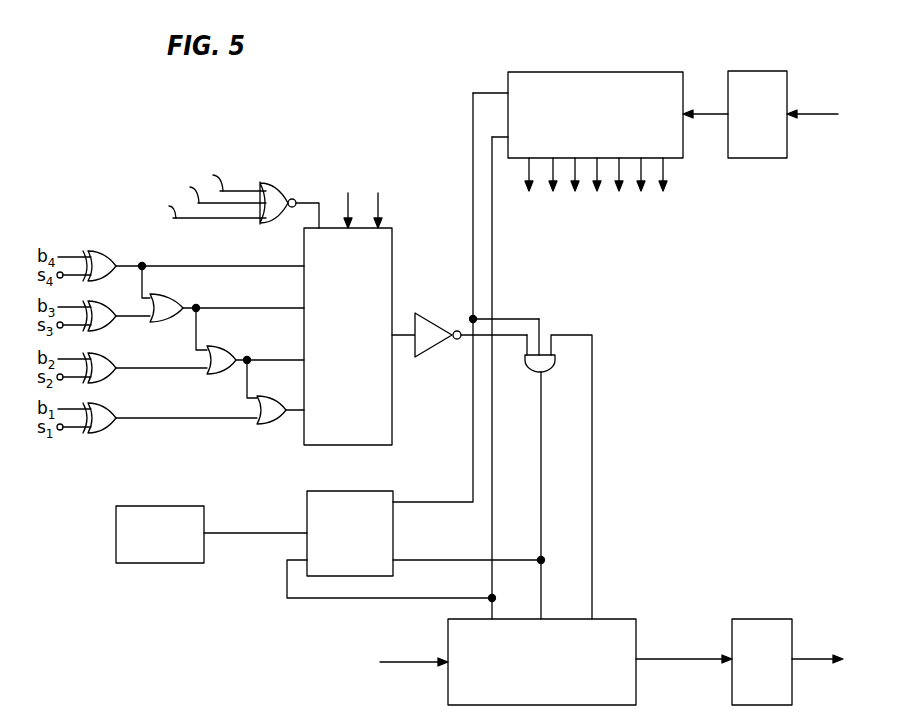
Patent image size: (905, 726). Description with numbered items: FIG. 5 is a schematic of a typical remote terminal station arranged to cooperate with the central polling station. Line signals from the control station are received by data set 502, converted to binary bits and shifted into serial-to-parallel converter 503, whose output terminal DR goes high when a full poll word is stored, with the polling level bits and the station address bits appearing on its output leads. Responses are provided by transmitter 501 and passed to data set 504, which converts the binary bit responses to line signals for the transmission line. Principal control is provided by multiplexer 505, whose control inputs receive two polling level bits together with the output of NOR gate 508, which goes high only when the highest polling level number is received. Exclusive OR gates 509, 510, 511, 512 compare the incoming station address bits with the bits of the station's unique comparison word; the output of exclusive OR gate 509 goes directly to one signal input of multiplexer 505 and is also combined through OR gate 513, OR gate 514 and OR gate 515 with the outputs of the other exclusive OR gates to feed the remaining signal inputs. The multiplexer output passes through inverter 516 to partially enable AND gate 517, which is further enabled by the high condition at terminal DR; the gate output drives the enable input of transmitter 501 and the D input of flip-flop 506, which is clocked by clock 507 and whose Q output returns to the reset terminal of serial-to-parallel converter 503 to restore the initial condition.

The transmitter 501 is at (619, 619).
The data set 502 is at (752, 71).
The serial-to-parallel converter 503 is at (632, 72).
The data set 504 is at (760, 619).
The multiplexer 505 is at (392, 422).
The flip-flop 506 is at (336, 491).
The clock 507 is at (149, 506).
The NOR gate 508 is at (288, 190).
The exclusive OR gate 509 is at (106, 257).
The exclusive OR gate 510 is at (105, 307).
The exclusive OR gate 511 is at (108, 359).
The exclusive OR gate 512 is at (117, 403).
The OR gate 513 is at (172, 301).
The OR gate 514 is at (228, 353).
The OR gate 515 is at (272, 397).
The inverter 516 is at (437, 316).
The AND gate 517 is at (548, 368).